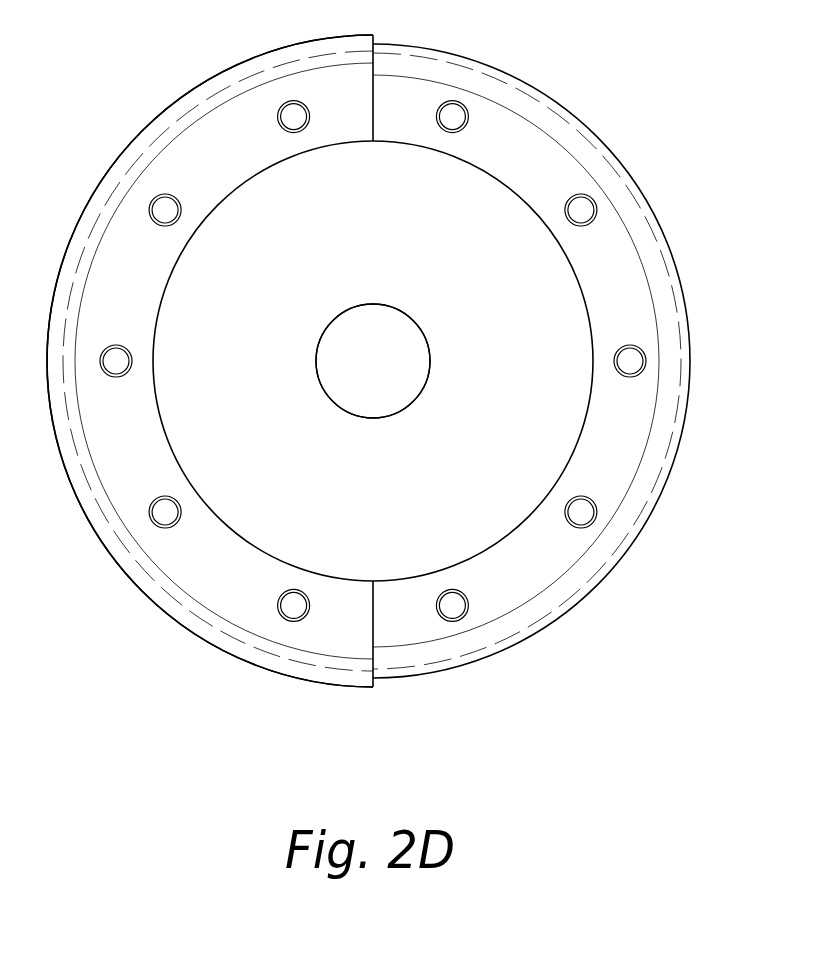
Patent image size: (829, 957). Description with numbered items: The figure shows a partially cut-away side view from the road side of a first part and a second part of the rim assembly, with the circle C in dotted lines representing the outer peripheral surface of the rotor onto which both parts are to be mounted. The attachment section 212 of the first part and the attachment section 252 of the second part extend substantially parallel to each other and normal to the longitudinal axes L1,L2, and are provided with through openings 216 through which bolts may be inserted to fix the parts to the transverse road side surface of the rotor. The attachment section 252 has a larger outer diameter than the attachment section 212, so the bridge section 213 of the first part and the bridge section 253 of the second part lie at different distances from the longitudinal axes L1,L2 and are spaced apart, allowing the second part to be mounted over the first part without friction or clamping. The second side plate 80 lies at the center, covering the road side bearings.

The attachment section of the second part 252 is at (208, 128).
The bridge section of the second part 253 is at (92, 193).
The bridge section of the first part 213 is at (583, 132).
The attachment section of the first part 212 is at (493, 158).
The through openings 216 is at (585, 208).
The second side plate 80 is at (393, 501).
The longitudinal axes L1,L2 is at (372, 362).
The circle C is at (664, 447).